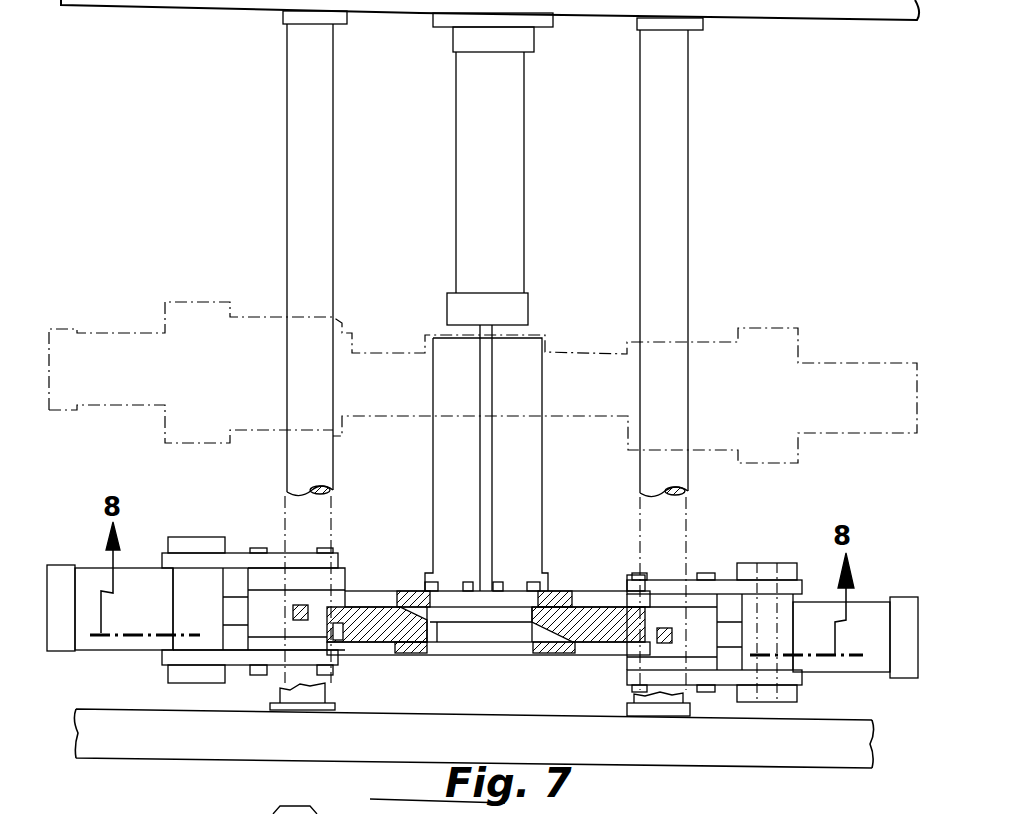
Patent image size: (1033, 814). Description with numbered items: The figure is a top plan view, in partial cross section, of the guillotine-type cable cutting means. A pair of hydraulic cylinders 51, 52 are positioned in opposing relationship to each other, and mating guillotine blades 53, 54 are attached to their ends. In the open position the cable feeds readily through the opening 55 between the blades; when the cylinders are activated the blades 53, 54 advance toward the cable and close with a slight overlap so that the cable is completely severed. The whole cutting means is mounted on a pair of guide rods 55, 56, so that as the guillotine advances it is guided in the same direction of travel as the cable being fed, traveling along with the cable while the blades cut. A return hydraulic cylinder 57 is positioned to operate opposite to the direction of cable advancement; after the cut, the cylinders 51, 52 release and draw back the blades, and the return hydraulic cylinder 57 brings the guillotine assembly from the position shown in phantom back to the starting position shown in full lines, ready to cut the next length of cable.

The hydraulic cylinder 51 is at (134, 580).
The hydraulic cylinder 52 is at (873, 613).
The guillotine blade 53 is at (388, 633).
The guillotine blade 54 is at (596, 635).
The guide rod 55 is at (318, 200).
The guide rod 56 is at (673, 163).
The return hydraulic cylinder 57 is at (505, 192).